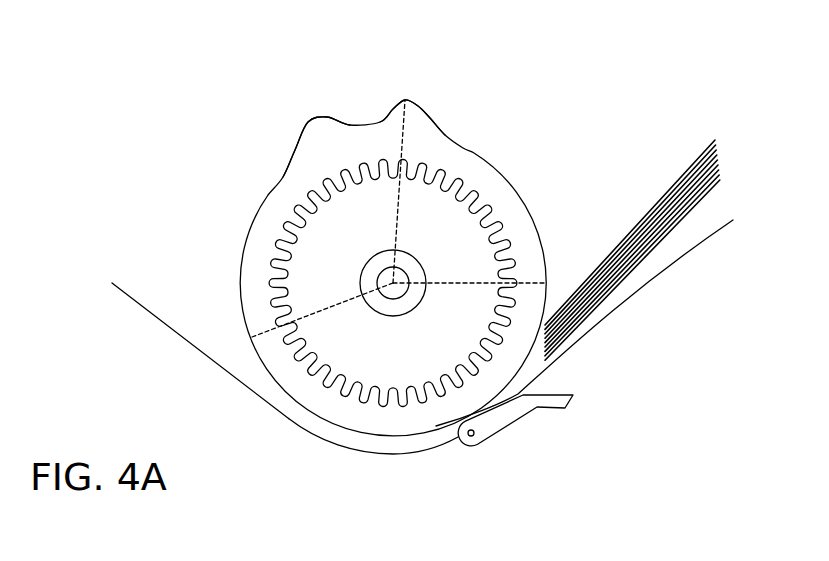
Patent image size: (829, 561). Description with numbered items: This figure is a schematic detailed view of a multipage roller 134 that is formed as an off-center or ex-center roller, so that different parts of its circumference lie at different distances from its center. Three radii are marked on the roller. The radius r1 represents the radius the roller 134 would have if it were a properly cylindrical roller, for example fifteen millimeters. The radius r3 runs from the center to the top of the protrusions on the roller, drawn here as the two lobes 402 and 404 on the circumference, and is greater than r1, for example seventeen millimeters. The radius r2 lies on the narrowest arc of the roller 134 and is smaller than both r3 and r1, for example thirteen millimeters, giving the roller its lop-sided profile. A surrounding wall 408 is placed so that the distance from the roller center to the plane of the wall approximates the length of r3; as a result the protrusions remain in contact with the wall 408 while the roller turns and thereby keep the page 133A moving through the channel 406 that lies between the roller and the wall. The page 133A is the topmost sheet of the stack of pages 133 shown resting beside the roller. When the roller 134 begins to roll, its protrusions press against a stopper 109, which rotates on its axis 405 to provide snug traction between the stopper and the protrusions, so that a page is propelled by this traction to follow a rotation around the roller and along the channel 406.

The multipage roller 134 is at (497, 170).
The first cam lobe 402 is at (405, 100).
The second cam lobe 404 is at (308, 122).
The radius R1 r1 is at (469, 275).
The radius R2 r2 is at (322, 309).
The radius R3 r3 is at (412, 191).
The surrounding wall 408 is at (157, 322).
The channel 406 is at (435, 439).
The stopper 109 is at (540, 407).
The axis 405 is at (477, 438).
The sheet stack 133 is at (720, 148).
The page 133A is at (692, 163).